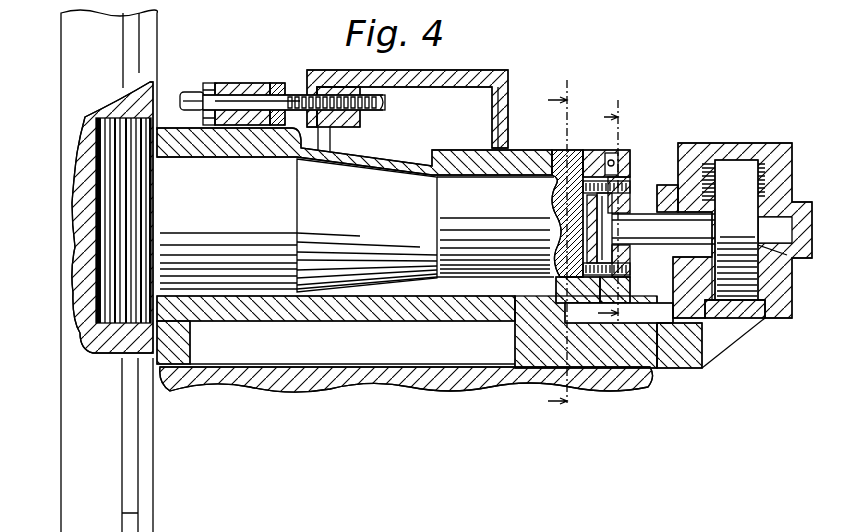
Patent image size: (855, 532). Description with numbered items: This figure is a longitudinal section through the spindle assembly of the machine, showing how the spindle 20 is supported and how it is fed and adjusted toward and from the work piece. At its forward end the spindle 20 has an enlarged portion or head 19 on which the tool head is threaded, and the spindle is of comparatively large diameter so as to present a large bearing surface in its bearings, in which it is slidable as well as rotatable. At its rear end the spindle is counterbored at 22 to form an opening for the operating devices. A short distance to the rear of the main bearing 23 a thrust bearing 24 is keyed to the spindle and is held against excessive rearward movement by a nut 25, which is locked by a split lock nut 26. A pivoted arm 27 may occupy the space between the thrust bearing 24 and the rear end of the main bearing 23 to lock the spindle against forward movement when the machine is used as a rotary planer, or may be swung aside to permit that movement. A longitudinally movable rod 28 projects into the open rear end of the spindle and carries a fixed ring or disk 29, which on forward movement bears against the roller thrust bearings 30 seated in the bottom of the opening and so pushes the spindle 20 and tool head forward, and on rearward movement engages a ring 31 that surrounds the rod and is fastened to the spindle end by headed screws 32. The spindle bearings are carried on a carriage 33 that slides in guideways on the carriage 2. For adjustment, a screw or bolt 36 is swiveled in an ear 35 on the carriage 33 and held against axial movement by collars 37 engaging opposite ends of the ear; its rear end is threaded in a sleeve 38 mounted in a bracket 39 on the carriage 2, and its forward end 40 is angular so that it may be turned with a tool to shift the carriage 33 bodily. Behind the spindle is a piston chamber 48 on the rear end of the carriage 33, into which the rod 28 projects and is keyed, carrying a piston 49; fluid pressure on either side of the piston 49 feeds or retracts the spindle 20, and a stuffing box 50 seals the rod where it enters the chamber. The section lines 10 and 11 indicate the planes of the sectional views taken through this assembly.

The carriage 2 is at (318, 378).
The section line 10- 10 is at (562, 101).
The section line 11- 11 is at (631, 114).
The enlarged portion or head 19 is at (106, 144).
The spindle 20 is at (246, 270).
The counterbore 22 is at (562, 210).
The bearing 23 is at (478, 158).
The thrust bearing 24 is at (585, 150).
The nut 25 is at (605, 150).
The split lock nut 26 is at (612, 178).
The pivoted arm 27 is at (556, 165).
The rod 28 is at (636, 222).
The ring or disk 29 is at (622, 260).
The roller thrust bearings 30 is at (548, 287).
The ring 31 is at (619, 314).
The headed screws 32 is at (664, 362).
The carriage 33 is at (623, 358).
The ear or lug 35 is at (240, 83).
The screw or bolt 36 is at (298, 95).
The collars 37 is at (210, 85).
The sleeve 38 is at (368, 123).
The bracket 39 is at (489, 72).
The forward end of the screw 40 is at (191, 95).
The piston chamber 48 is at (748, 145).
The piston 49 is at (750, 324).
The stuffing box 50 is at (670, 200).